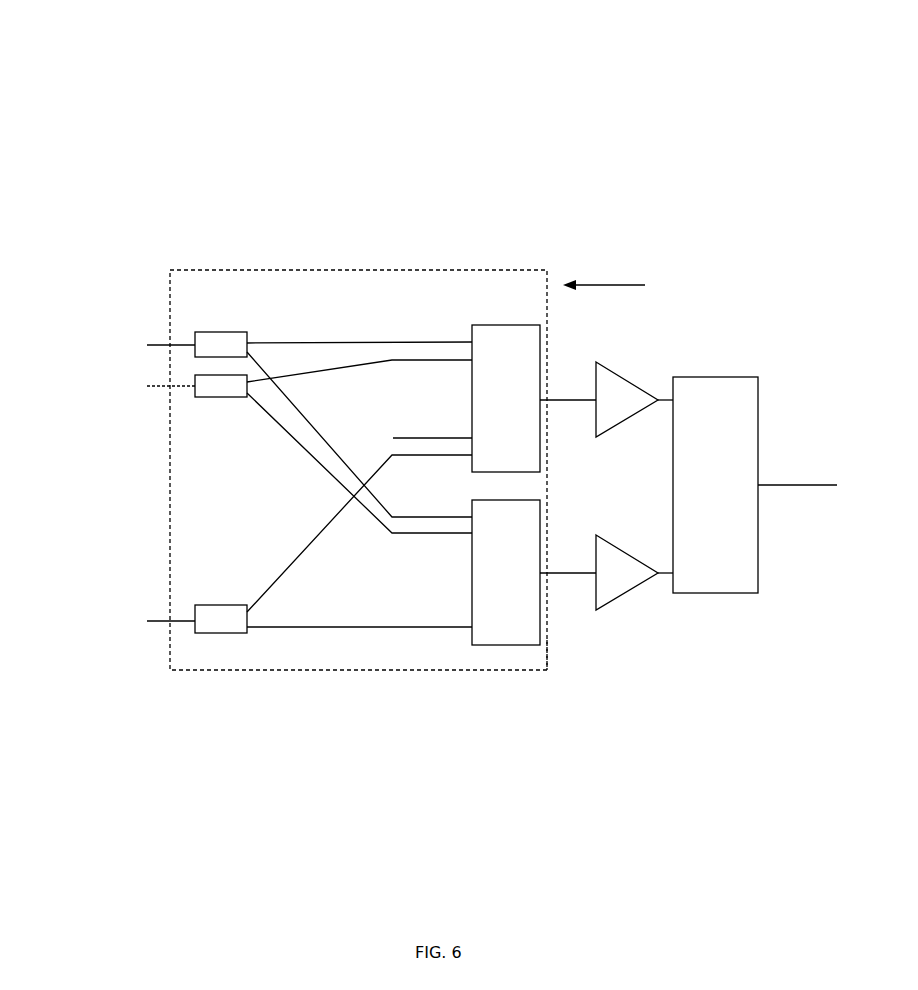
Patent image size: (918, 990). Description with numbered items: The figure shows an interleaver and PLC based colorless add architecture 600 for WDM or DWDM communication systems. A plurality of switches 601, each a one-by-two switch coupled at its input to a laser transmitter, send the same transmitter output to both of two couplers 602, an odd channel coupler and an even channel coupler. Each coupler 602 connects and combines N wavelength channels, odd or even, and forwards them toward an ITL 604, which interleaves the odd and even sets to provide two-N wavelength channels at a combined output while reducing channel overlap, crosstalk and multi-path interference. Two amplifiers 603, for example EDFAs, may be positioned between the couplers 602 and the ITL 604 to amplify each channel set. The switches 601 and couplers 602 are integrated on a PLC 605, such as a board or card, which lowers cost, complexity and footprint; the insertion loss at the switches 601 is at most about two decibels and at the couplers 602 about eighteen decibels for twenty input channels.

The interleaver and PLC based colorless add architecture 600 is at (124, 58).
The switch 601 is at (208, 357).
The coupler 602 is at (472, 397).
The amplifier 603 is at (628, 381).
The ITL 604 is at (758, 413).
The PLC 605 is at (548, 653).